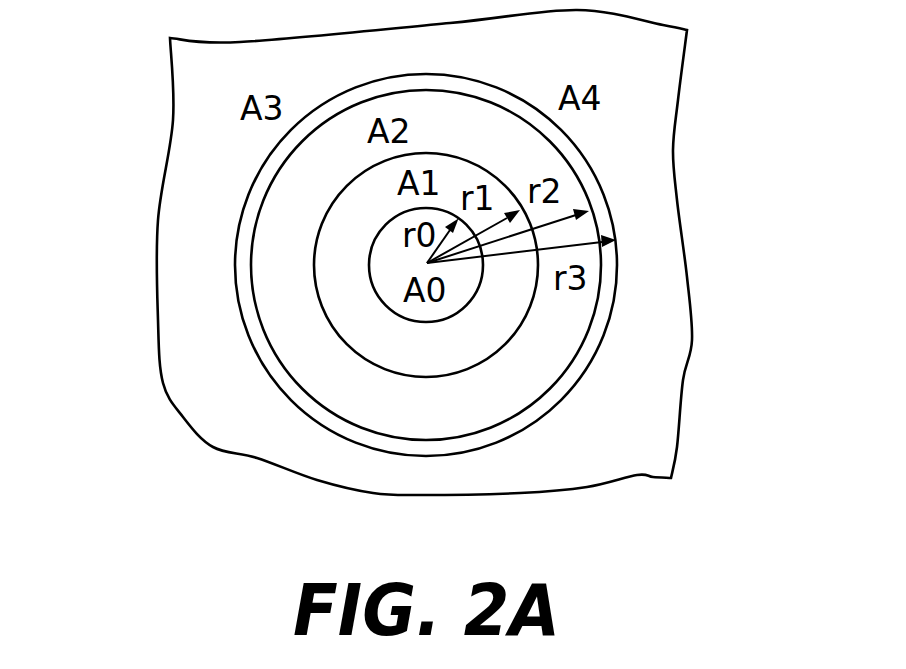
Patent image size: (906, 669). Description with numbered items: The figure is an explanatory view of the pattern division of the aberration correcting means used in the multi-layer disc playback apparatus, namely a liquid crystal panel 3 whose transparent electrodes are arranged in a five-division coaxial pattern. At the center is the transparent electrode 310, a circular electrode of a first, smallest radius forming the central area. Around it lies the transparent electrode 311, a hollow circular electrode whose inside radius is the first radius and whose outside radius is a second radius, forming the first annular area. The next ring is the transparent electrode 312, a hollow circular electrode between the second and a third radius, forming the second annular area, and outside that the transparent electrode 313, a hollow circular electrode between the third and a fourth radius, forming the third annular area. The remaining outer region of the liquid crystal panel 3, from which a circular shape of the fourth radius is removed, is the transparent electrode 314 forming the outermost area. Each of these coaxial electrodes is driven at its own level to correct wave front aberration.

The liquid crystal panel 3 is at (702, 138).
The transparent electrode 310 is at (375, 245).
The transparent electrode 311 is at (353, 313).
The transparent electrode 312 is at (282, 293).
The transparent electrode 313 is at (277, 160).
The transparent electrode 314 is at (653, 278).